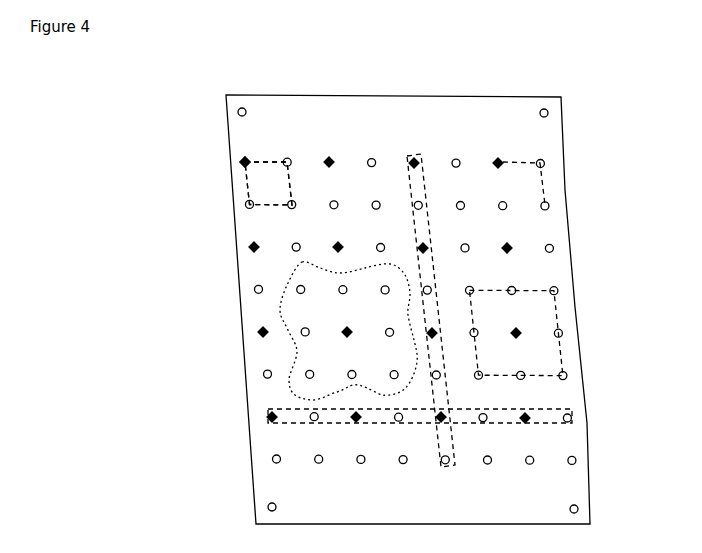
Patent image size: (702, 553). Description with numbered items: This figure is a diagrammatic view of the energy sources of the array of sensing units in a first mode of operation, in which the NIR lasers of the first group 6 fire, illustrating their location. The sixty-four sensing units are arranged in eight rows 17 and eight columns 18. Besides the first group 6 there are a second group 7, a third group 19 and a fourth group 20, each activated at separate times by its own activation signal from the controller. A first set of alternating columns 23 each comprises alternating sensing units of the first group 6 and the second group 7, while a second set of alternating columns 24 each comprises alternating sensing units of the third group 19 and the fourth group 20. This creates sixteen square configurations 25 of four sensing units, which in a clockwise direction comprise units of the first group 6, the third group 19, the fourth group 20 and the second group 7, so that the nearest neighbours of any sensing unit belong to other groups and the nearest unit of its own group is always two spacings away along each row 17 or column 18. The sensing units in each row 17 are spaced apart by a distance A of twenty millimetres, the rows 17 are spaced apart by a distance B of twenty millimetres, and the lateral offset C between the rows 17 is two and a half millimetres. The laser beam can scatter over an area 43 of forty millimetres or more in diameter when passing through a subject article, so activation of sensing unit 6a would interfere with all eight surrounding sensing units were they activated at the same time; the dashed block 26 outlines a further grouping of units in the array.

The first group 6 is at (243, 160).
The third group 19 is at (287, 166).
The second group 7 is at (246, 203).
The fourth group 20 is at (291, 208).
The area 43 is at (259, 331).
The sensing unit 6a is at (345, 335).
The rows 17 is at (282, 408).
The columns 18 is at (437, 437).
The first set of alternating columns 23 is at (243, 159).
The square configurations 25 is at (270, 160).
The second set of alternating columns 24 is at (373, 159).
The distance A is at (522, 160).
The distance B is at (543, 172).
The lateral offset C is at (548, 208).
The electrode block 26 is at (556, 305).